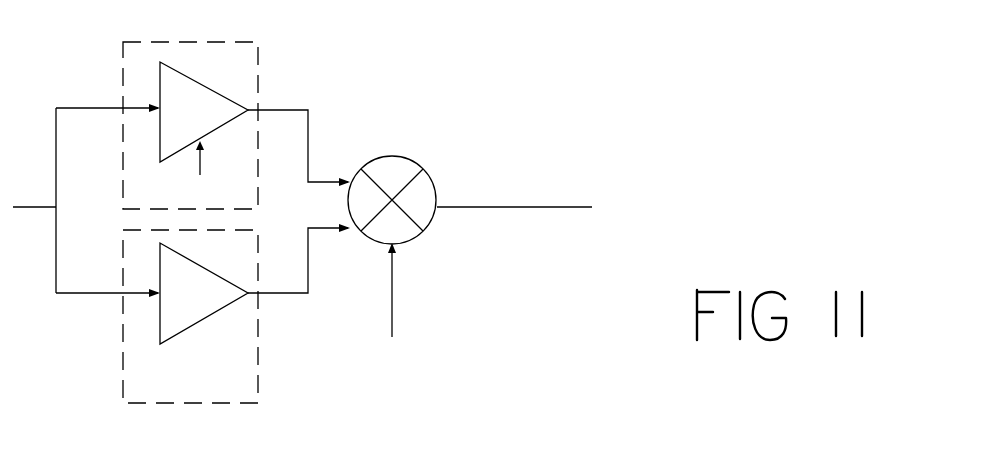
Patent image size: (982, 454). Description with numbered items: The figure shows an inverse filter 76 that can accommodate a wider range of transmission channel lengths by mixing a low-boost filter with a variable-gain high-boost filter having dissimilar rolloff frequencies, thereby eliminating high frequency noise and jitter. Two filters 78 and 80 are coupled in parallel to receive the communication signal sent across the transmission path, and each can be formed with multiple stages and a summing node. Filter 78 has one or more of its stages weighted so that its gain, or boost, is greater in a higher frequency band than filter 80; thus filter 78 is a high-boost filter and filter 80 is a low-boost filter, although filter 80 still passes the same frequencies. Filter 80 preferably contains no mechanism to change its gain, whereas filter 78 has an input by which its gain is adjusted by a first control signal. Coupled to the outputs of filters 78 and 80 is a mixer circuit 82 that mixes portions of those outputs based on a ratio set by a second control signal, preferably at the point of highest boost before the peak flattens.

The inverse filter 76 is at (408, 62).
The high-boost filter 78 is at (258, 92).
The low-boost filter 80 is at (258, 345).
The mixer circuit 82 is at (413, 158).